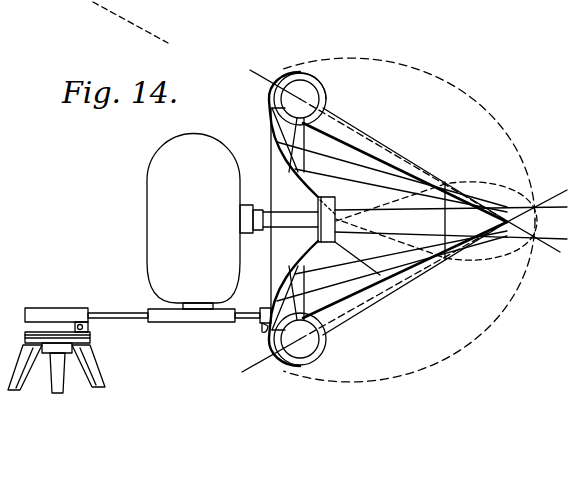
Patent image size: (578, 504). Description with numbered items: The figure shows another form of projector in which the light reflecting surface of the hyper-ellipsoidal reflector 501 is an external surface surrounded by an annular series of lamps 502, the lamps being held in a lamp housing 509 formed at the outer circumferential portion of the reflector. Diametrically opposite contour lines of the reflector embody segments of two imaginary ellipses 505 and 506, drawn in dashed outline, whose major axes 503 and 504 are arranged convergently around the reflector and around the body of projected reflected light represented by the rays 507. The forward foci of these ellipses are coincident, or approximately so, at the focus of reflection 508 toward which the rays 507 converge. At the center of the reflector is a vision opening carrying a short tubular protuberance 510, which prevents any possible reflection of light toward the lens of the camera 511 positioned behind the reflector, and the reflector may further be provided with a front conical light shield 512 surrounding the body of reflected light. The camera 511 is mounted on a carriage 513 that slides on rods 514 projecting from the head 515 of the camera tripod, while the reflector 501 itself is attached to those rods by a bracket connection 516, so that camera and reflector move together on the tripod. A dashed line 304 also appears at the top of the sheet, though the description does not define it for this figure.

The dashed connection line 304 is at (92, 3).
The hyper-ellipsoidal reflector 501 is at (273, 152).
The annular series of lamps 502 is at (300, 90).
The major axis 503 is at (366, 138).
The major axis 504 is at (387, 282).
The imaginary ellipse 505 is at (447, 90).
The imaginary ellipse 506 is at (441, 352).
The rays 507 is at (335, 197).
The focus of reflection 508 is at (506, 224).
The lamp housing 509 is at (325, 92).
The tubular protuberance 510 is at (322, 238).
The camera 511 is at (147, 205).
The front conical light shield 512 is at (424, 184).
The carriage 513 is at (185, 322).
The rods 514 is at (113, 311).
The head 515 is at (38, 312).
The bracket connection 516 is at (263, 327).